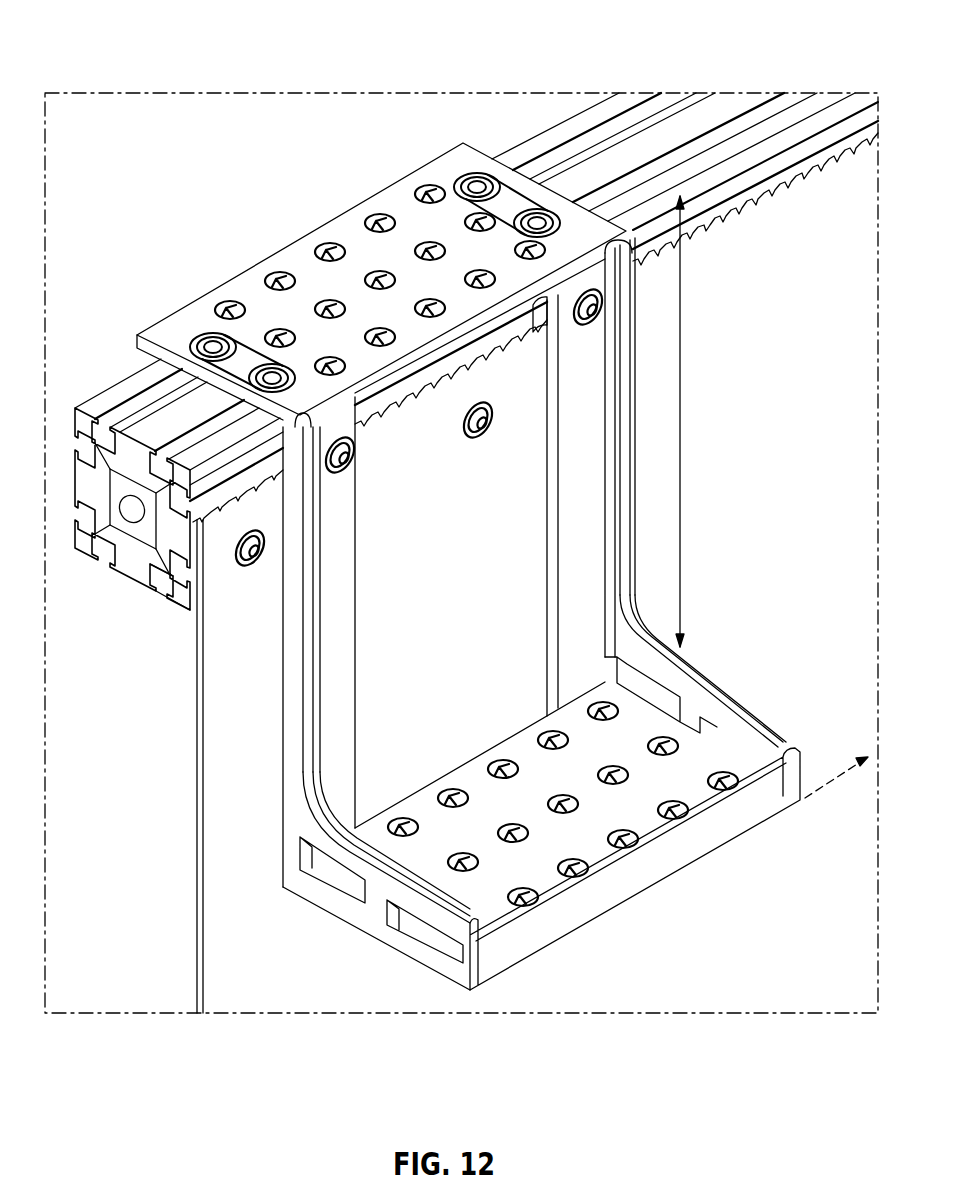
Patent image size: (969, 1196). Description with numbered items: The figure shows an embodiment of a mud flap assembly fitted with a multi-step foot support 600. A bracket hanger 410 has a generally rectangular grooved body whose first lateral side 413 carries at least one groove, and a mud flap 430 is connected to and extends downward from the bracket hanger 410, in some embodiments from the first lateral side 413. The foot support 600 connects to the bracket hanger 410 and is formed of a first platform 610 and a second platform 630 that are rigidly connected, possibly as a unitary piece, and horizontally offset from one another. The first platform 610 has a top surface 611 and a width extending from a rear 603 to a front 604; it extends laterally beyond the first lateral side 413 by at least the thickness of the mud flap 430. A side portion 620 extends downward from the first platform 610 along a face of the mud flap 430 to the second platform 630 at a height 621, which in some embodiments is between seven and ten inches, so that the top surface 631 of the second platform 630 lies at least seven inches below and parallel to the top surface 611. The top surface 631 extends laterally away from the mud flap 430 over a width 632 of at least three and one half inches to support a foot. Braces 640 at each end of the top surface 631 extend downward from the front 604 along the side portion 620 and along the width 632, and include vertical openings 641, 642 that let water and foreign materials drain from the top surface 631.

The bracket hanger 410 is at (640, 138).
The first lateral side 413 is at (165, 583).
The mud flap 430 is at (217, 995).
The foot support 600 is at (481, 510).
The rear 603 is at (180, 312).
The front 604 is at (577, 195).
The first platform 610 is at (360, 224).
The top surface 611 is at (380, 203).
The side portion 620 is at (567, 497).
The height 621 is at (681, 442).
The second platform 630 is at (577, 836).
The top surface 631 is at (665, 836).
The width 632 is at (763, 696).
The braces 640 is at (465, 790).
The vertical opening 641 is at (320, 877).
The vertical opening 642 is at (430, 938).